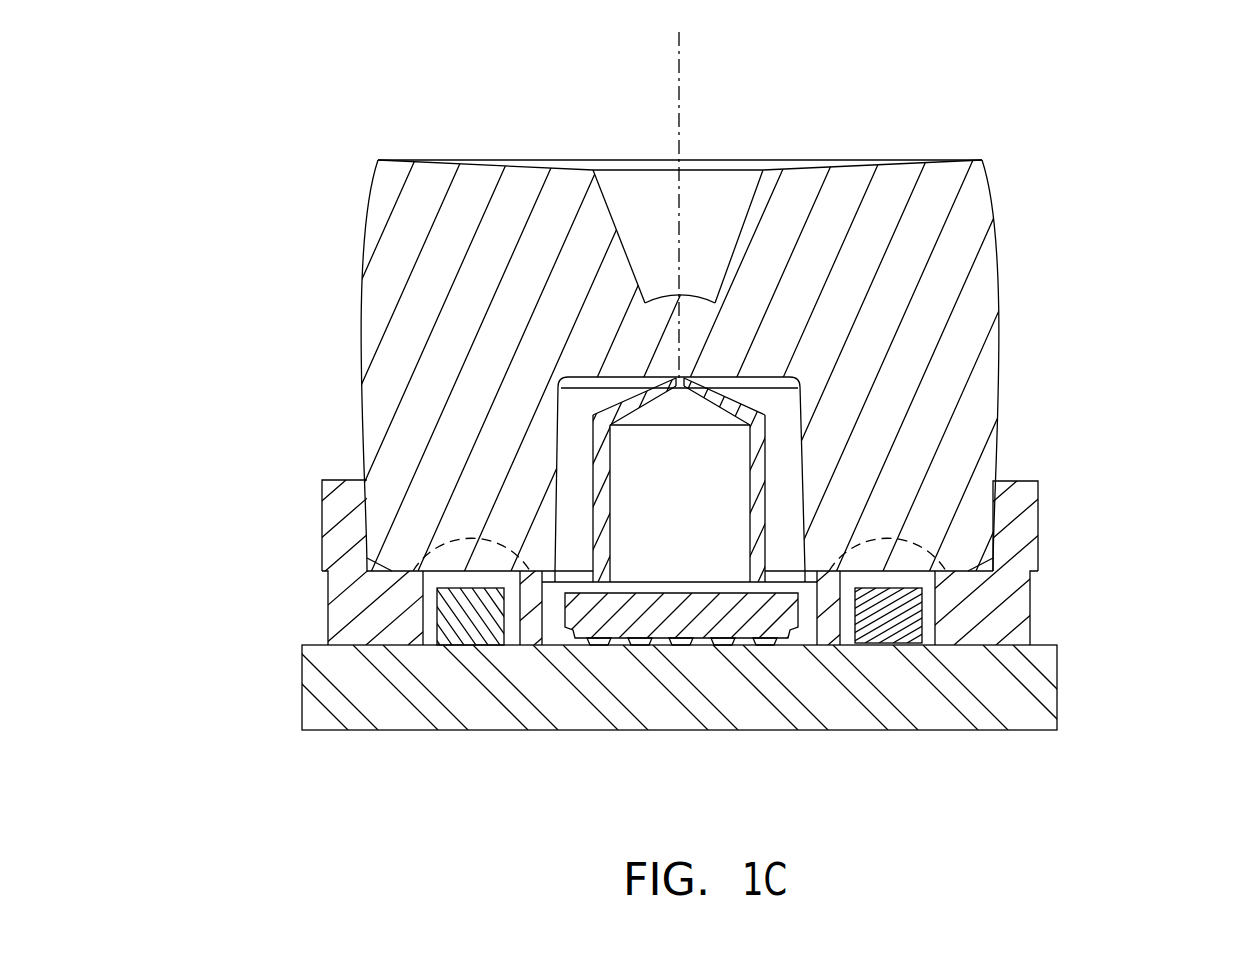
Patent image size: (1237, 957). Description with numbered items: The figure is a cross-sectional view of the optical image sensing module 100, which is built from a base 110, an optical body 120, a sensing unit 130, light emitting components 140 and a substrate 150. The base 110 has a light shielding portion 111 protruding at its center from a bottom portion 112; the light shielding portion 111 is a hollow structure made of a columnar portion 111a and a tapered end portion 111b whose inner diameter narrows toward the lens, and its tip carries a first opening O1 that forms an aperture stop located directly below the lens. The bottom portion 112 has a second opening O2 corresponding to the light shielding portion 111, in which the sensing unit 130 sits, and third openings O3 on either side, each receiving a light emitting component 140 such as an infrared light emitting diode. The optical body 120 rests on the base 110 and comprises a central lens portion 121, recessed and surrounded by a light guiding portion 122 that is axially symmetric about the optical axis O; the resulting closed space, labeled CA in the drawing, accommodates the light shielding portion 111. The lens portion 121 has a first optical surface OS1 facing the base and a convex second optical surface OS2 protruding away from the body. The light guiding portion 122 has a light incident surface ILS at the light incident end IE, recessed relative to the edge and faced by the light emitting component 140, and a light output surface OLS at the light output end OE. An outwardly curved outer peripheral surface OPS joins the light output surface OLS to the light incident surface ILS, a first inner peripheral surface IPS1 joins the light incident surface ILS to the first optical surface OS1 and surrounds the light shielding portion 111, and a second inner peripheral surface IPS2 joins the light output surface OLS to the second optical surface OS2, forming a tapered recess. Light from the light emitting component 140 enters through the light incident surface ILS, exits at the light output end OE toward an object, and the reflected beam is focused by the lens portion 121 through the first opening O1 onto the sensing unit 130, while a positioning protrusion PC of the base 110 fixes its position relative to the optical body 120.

The optical image sensing module 100 is at (692, 426).
The base 110 is at (692, 614).
The light shielding portion 111 is at (835, 325).
The columnar portion 111a is at (752, 460).
The tapered end portion 111b is at (730, 404).
The bottom portion 112 is at (993, 632).
The optical body 120 is at (701, 438).
The lens portion 121 is at (663, 320).
The light guiding portion 122 is at (927, 303).
The sensing unit 130 is at (677, 702).
The light emitting component 140 is at (907, 615).
The substrate 150 is at (1008, 690).
The optical axis O is at (680, 43).
The first opening O1 is at (682, 374).
The second opening O2 is at (553, 618).
The third opening O3 is at (905, 583).
The light output surface OLS is at (515, 166).
The light output end OE is at (484, 164).
The outer peripheral surface OPS is at (357, 357).
The first inner peripheral surface IPS1 is at (562, 480).
The second inner peripheral surface IPS2 is at (620, 222).
The first optical surface OS1 is at (616, 382).
The second optical surface OS2 is at (664, 290).
The cavity CA is at (819, 581).
The light incident end IE is at (446, 573).
The light incident surface ILS is at (487, 548).
The positioning protrusion PC is at (910, 553).